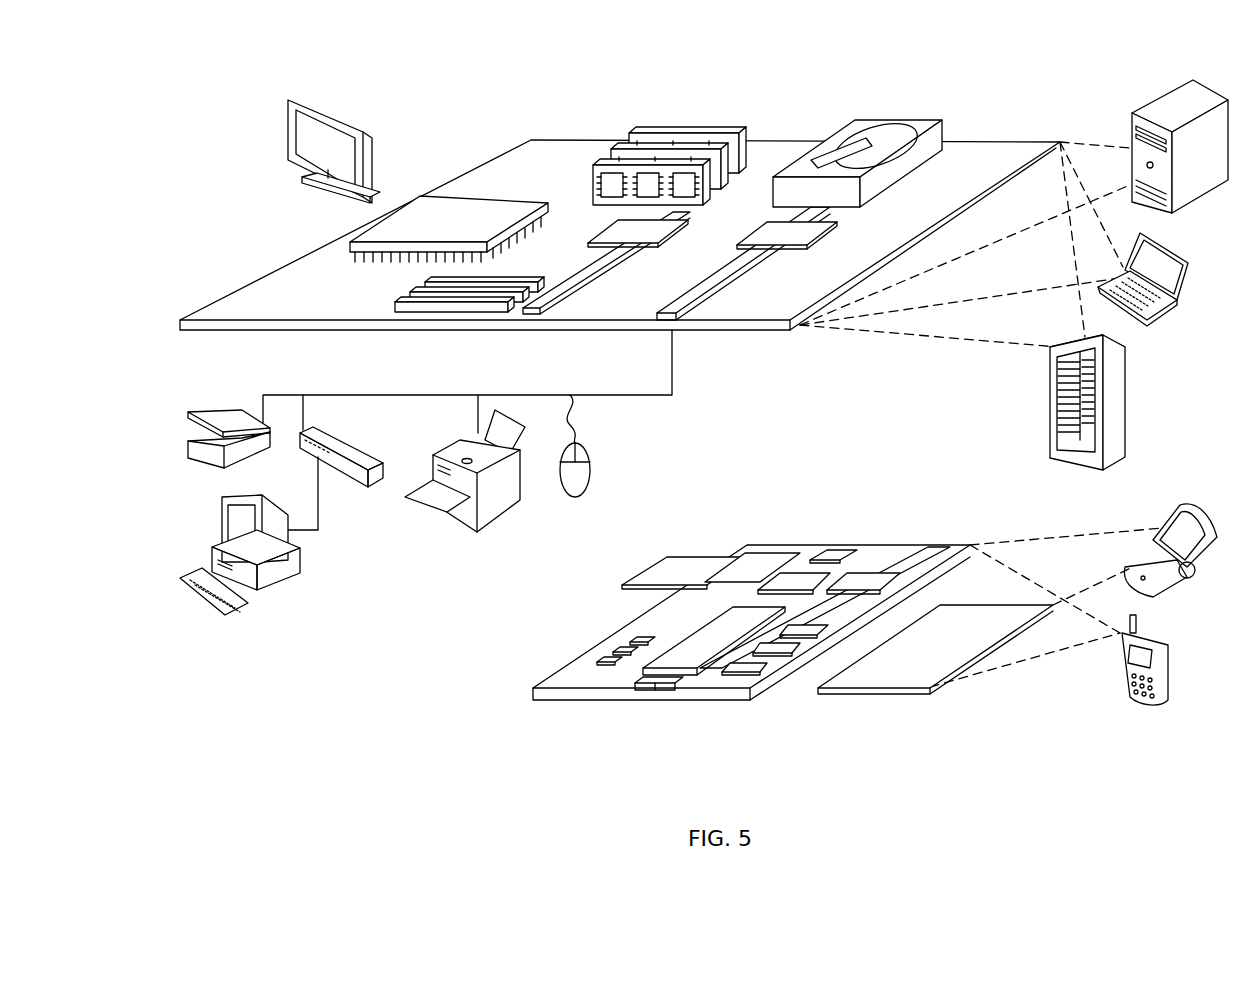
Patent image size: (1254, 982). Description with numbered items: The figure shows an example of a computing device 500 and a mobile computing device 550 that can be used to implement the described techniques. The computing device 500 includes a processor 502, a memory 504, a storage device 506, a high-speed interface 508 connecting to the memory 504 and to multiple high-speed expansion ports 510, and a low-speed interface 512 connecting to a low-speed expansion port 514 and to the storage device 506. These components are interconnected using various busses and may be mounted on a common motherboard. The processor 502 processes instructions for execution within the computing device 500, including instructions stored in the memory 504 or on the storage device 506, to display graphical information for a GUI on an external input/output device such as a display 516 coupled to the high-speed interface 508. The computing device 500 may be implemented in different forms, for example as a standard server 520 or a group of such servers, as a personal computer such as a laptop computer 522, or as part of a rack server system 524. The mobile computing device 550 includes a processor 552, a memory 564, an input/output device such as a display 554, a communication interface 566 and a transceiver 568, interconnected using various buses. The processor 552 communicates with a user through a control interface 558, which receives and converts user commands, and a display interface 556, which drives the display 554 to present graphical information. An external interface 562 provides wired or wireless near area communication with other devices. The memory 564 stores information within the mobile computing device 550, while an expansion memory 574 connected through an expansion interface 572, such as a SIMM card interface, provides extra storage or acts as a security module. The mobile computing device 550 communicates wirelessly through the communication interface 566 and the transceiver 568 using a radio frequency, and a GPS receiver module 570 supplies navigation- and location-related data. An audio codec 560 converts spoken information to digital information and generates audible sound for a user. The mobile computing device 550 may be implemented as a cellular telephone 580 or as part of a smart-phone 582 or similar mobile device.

The computing device 500 is at (462, 118).
The processor 502 is at (350, 246).
The memory 504 is at (647, 136).
The storage device 506 is at (853, 123).
The high-speed interface 508 is at (607, 228).
The high-speed expansion ports 510 is at (410, 297).
The low-speed interface 512 is at (770, 233).
The low-speed expansion port 514 is at (677, 321).
The display 516 is at (292, 100).
The standard server 520 is at (1132, 125).
The laptop computer 522 is at (1190, 260).
The rack server system 524 is at (1052, 430).
The mobile computing device 550 is at (512, 703).
The processor 552 is at (690, 660).
The display 554 is at (898, 676).
The display interface 556 is at (753, 668).
The control interface 558 is at (778, 651).
The audio codec 560 is at (803, 630).
The external interface 562 is at (658, 692).
The memory 564 is at (610, 650).
The communication interface 566 is at (798, 578).
The transceiver 568 is at (867, 580).
The GPS receiver module 570 is at (842, 548).
The expansion interface 572 is at (733, 558).
The expansion memory 574 is at (663, 560).
The cellular telephone 580 is at (1165, 505).
The smart-phone 582 is at (1123, 660).